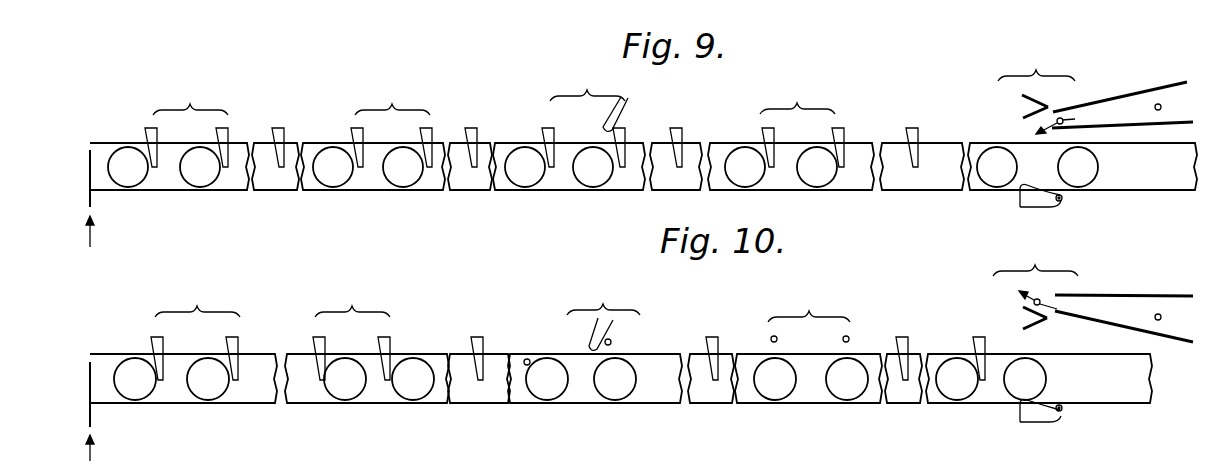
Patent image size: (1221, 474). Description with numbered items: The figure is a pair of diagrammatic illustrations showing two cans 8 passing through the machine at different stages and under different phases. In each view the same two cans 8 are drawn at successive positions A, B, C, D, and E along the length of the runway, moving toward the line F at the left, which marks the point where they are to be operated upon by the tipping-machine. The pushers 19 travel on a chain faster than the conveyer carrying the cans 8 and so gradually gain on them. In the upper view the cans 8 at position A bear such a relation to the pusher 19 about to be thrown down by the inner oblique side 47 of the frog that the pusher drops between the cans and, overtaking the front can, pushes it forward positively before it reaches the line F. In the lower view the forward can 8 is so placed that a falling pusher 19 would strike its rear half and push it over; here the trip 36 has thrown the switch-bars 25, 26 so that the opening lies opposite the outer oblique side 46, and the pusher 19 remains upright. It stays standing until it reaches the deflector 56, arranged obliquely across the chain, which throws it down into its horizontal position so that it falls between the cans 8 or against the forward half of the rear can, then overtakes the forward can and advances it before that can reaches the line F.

In FIG. 9, the cans 8 is at (172, 207).
In FIG. 10, the cans 8 is at (385, 421).
In FIG. 9, the pushers 19 is at (227, 132).
In FIG. 10, the pushers 19 is at (236, 344).
In FIG. 9, the switch-bar 25 is at (1123, 96).
In FIG. 10, the switch-bar 25 is at (1103, 294).
In FIG. 9, the switch-bar 26 is at (1123, 126).
In FIG. 10, the switch-bar 26 is at (1124, 323).
In FIG. 9, the trip 36 is at (1020, 206).
In FIG. 10, the trip 36 is at (1020, 421).
In FIG. 9, the outer oblique side of frog 46 is at (1020, 96).
In FIG. 10, the outer oblique side of frog 46 is at (1020, 305).
In FIG. 9, the inner oblique side of frog 47 is at (1020, 119).
In FIG. 10, the inner oblique side of frog 47 is at (1020, 324).
In FIG. 9, the deflector 56 is at (606, 116).
In FIG. 10, the deflector 56 is at (596, 334).
In FIG. 9, the position A is at (1036, 59).
In FIG. 10, the position A is at (1035, 254).
In FIG. 9, the position B is at (797, 92).
In FIG. 10, the position B is at (809, 300).
In FIG. 9, the position C is at (587, 80).
In FIG. 10, the position C is at (603, 294).
In FIG. 9, the position D is at (392, 96).
In FIG. 10, the position D is at (352, 297).
In FIG. 9, the position E is at (190, 94).
In FIG. 10, the position E is at (197, 296).
In FIG. 9, the line F is at (71, 198).
In FIG. 10, the line F is at (92, 393).